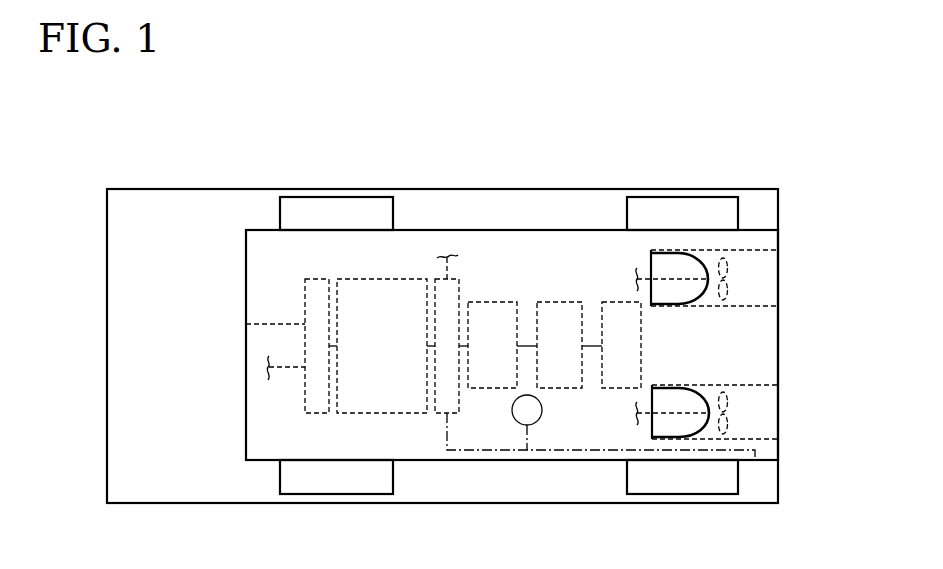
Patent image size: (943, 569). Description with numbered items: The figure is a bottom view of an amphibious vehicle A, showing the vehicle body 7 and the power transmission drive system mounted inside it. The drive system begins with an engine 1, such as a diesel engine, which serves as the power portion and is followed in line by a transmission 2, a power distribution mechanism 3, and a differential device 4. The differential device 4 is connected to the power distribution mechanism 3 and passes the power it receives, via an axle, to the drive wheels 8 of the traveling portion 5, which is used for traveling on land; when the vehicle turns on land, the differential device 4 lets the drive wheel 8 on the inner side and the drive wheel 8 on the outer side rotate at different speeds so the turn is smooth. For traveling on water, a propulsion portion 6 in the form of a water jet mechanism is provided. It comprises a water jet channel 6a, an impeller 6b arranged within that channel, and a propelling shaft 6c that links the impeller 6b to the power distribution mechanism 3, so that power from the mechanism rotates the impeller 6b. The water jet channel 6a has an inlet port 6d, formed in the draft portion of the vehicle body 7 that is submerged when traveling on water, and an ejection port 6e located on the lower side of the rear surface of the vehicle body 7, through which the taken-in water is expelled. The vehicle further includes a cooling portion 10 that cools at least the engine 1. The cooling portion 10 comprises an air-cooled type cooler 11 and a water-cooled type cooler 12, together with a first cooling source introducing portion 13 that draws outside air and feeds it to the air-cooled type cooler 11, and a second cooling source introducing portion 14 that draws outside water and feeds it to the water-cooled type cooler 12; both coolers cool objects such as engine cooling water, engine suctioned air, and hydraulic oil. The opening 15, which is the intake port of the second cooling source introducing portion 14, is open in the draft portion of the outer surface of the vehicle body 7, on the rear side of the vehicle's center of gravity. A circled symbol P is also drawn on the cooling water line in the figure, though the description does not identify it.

The amphibious vehicle A is at (666, 108).
The vehicle body 7 is at (194, 183).
The drive wheels 8 is at (318, 197).
The traveling portion 5 is at (526, 345).
The engine 1 is at (403, 278).
The transmission 2 is at (490, 302).
The power distribution mechanism 3 is at (556, 302).
The differential device 4 is at (620, 302).
The propulsion portion 6 is at (738, 290).
The water jet channel 6a is at (745, 250).
The impeller 6b is at (721, 300).
The propelling shaft 6c is at (668, 285).
The inlet port 6d is at (659, 250).
The ejection port 6e is at (778, 274).
The cooling portion 10 is at (452, 395).
The air-cooled type cooler 11 is at (305, 397).
The water-cooled type cooler 12 is at (441, 415).
The first cooling source introducing portion 13 is at (270, 323).
The second cooling source introducing portion 14 is at (570, 452).
The opening (intake port) 15 is at (757, 459).
The power source P is at (527, 410).